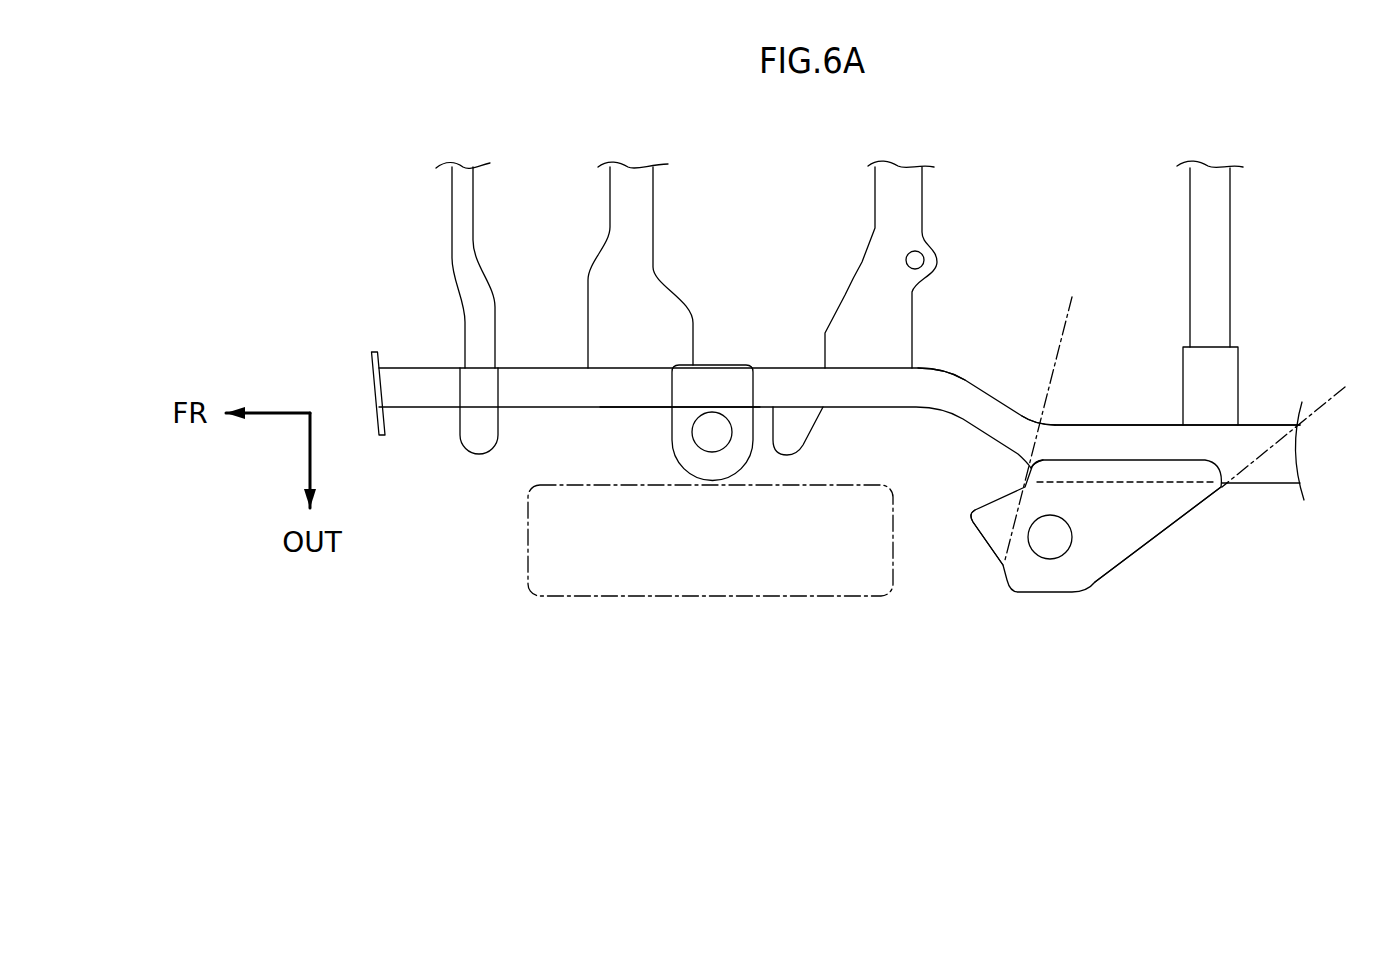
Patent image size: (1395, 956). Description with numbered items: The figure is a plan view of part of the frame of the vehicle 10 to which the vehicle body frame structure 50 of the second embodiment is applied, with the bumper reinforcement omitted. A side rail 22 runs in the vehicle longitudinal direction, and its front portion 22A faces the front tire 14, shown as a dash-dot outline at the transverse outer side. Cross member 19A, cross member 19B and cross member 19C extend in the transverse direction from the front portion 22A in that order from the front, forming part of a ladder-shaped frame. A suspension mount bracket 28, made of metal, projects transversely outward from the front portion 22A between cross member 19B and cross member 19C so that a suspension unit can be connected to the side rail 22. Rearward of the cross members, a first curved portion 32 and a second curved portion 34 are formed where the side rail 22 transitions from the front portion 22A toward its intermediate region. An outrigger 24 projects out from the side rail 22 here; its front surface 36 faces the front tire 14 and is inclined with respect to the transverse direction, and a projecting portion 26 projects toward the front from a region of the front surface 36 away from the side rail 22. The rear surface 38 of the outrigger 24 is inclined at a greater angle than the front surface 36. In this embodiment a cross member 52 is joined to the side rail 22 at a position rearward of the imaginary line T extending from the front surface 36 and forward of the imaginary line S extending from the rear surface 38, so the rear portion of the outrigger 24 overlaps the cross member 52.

The vehicle 10 is at (1276, 533).
The front tire 14 is at (527, 553).
The cross member 19A is at (475, 200).
The cross member 19B is at (655, 200).
The cross member 19C is at (924, 200).
The side rail 22 is at (532, 412).
The front portion 22A is at (568, 409).
The outrigger 24 is at (1123, 566).
The projecting portion 26 is at (987, 550).
The suspension mount bracket 28 is at (675, 441).
The first curved portion 32 is at (950, 368).
The second curved portion 34 is at (1034, 417).
The front surface 36 is at (1022, 480).
The rear surface 38 is at (1172, 522).
The vehicle body frame structure 50 is at (1156, 561).
The cross member 52 is at (1232, 222).
The imaginary line T is at (1065, 330).
The imaginary line S is at (1333, 398).